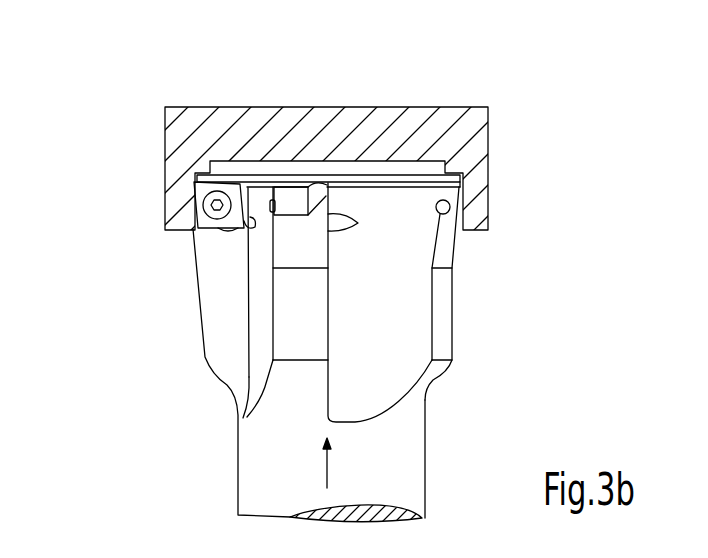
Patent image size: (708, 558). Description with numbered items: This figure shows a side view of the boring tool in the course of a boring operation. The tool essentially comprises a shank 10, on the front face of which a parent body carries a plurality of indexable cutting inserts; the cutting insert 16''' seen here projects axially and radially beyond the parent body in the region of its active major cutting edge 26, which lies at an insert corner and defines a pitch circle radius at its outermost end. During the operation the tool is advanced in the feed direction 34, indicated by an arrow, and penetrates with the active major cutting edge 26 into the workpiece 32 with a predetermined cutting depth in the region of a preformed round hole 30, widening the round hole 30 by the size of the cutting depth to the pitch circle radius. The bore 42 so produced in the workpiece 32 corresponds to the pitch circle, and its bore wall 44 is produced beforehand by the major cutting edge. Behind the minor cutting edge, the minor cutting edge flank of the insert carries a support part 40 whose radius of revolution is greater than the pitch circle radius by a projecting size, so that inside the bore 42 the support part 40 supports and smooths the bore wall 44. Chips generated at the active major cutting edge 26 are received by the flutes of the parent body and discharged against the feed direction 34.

The shank 10 is at (403, 465).
The cutting insert 16''' is at (250, 127).
The active major cutting edge 26 is at (193, 183).
The preformed round hole 30 is at (447, 173).
The workpiece 32 is at (453, 133).
The feed direction 34 is at (330, 470).
The support part 40 is at (195, 203).
The bore 42 is at (195, 232).
The bore wall 44 is at (260, 388).